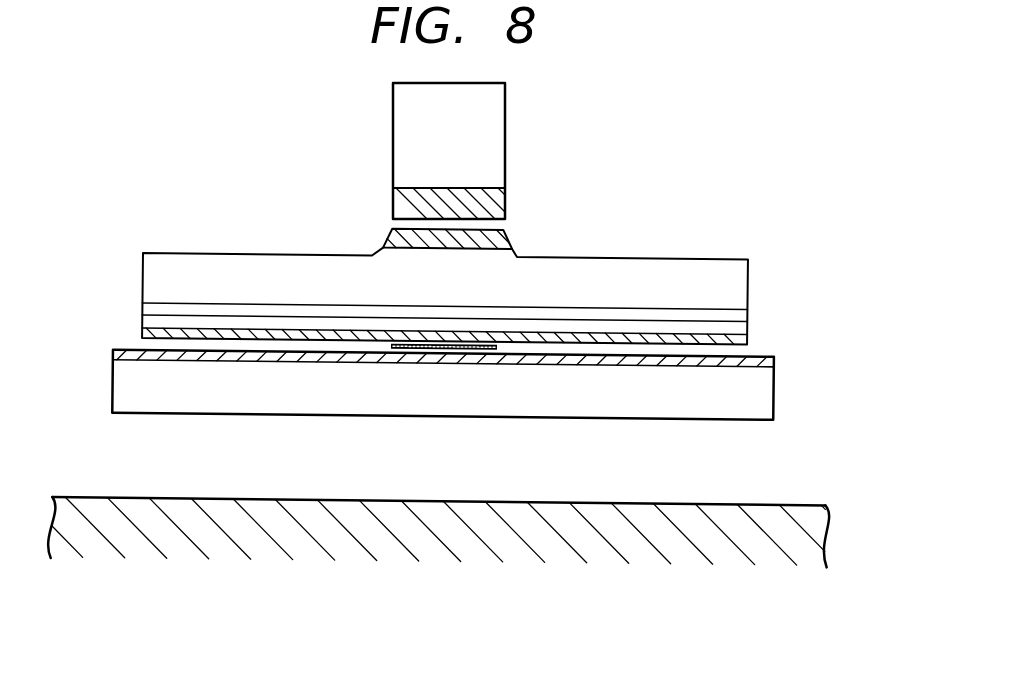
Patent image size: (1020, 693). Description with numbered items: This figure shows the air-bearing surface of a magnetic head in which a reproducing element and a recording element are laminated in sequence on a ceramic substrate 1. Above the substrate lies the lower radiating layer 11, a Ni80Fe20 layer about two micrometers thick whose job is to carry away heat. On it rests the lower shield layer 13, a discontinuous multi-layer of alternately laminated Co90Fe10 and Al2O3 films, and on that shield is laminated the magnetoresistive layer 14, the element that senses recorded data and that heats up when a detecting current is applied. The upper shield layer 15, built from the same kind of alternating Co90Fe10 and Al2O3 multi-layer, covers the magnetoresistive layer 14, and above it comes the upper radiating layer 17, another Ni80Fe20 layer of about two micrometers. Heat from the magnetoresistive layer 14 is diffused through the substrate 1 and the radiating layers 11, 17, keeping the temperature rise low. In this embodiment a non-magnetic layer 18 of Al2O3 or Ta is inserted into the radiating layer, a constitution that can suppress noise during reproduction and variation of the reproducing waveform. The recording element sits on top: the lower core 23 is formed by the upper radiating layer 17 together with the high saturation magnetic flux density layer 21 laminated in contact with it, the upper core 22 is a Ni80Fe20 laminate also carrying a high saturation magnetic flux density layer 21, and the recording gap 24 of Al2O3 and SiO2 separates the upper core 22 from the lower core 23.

The ceramic substrate 1 is at (722, 557).
The lower radiating layer 11 is at (647, 400).
The lower shield layer 13 is at (553, 358).
The magnetoresistive layer 14 is at (472, 347).
The upper shield layer 15 is at (292, 335).
The upper radiating layer 17 is at (187, 272).
The non-magnetic layer 18 is at (238, 307).
The high saturation magnetic flux density layer 21 is at (490, 205).
The upper core 22 is at (515, 116).
The lower core 23 is at (663, 248).
The recording gap 24 is at (398, 222).